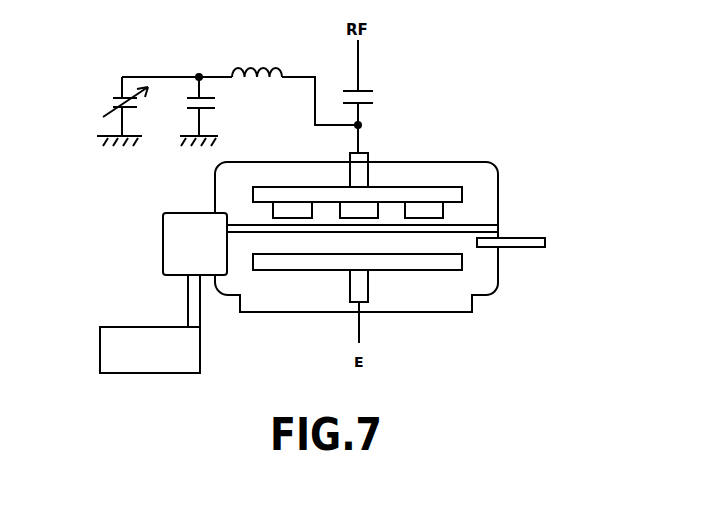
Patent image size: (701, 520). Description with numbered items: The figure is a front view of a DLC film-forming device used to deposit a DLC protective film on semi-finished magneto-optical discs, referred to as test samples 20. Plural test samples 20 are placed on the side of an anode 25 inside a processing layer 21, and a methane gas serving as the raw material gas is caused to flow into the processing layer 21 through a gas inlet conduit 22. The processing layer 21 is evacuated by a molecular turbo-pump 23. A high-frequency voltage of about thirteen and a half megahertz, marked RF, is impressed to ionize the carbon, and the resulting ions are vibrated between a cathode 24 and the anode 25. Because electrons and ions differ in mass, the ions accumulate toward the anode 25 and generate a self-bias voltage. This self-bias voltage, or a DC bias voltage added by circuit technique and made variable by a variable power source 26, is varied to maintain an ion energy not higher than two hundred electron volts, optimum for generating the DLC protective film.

The test samples 20 is at (445, 210).
The processing layer 21 is at (457, 172).
The gas inlet conduit 22 is at (528, 236).
The molecular turbo-pump 23 is at (175, 233).
The cathode 24 is at (420, 260).
The anode 25 is at (399, 196).
The variable power source 26 is at (103, 107).